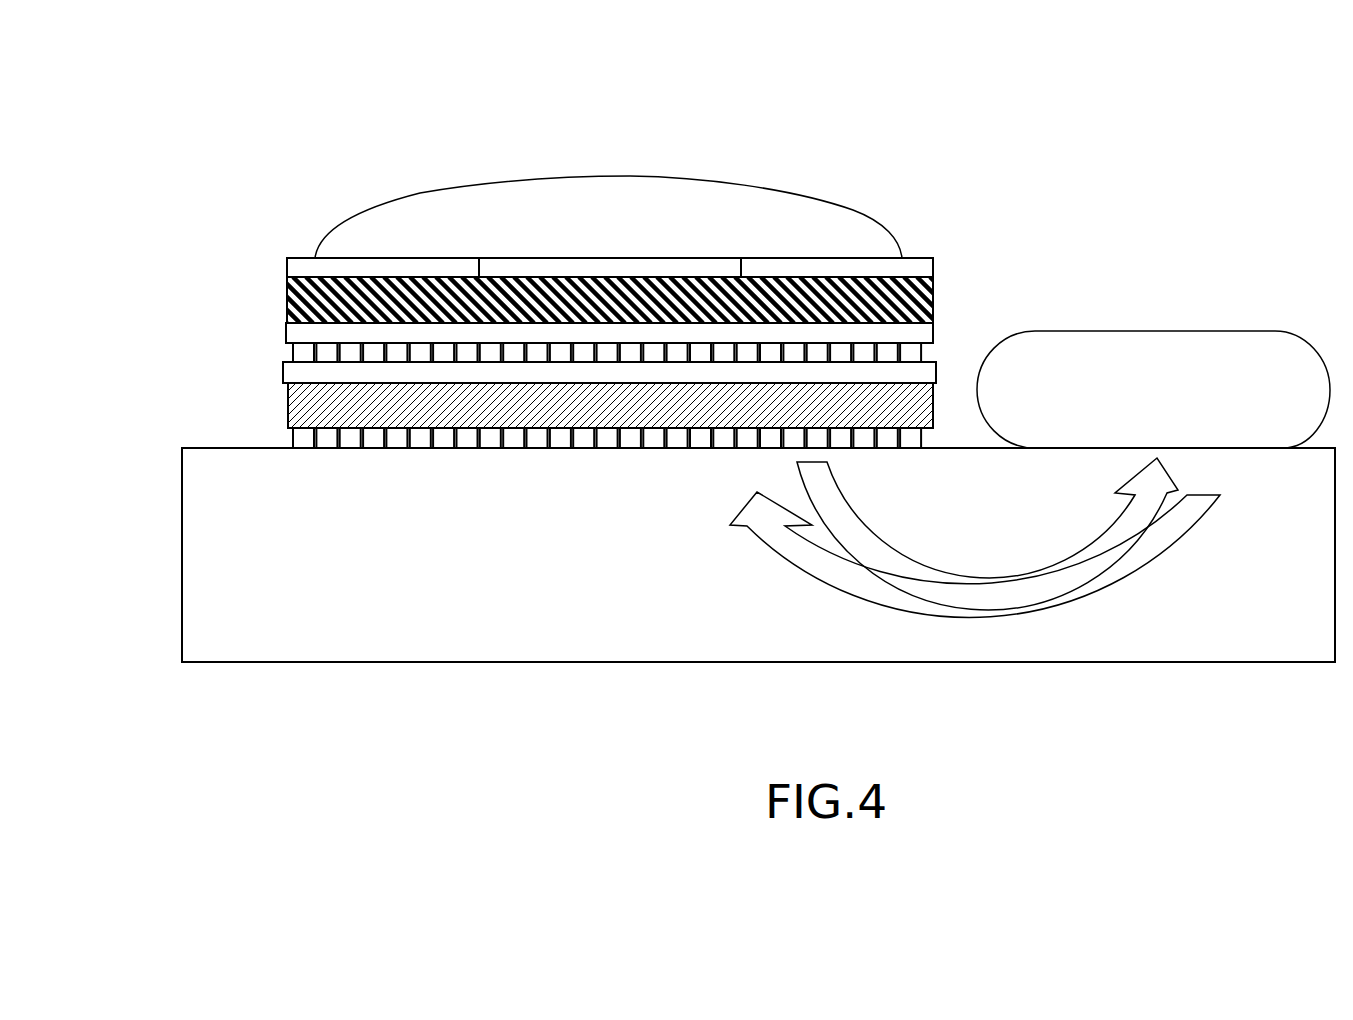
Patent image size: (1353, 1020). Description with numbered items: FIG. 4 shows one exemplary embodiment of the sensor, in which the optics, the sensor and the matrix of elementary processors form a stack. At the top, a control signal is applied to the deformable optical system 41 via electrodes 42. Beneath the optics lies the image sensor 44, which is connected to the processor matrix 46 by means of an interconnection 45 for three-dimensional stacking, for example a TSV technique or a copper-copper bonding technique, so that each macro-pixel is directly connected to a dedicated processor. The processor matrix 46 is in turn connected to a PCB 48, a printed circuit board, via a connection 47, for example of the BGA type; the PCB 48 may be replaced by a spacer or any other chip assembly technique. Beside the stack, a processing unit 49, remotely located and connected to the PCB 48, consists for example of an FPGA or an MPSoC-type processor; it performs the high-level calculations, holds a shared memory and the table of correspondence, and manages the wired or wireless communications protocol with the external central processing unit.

The deformable optical system 41 is at (632, 177).
The electrodes 42 is at (310, 270).
The image sensor 44 is at (915, 302).
The interconnection for 3D stacking 45 is at (958, 355).
The processor matrix 46 is at (307, 407).
The connection 47 is at (288, 440).
The PCB 48 is at (197, 573).
The processing unit 49 is at (1200, 347).